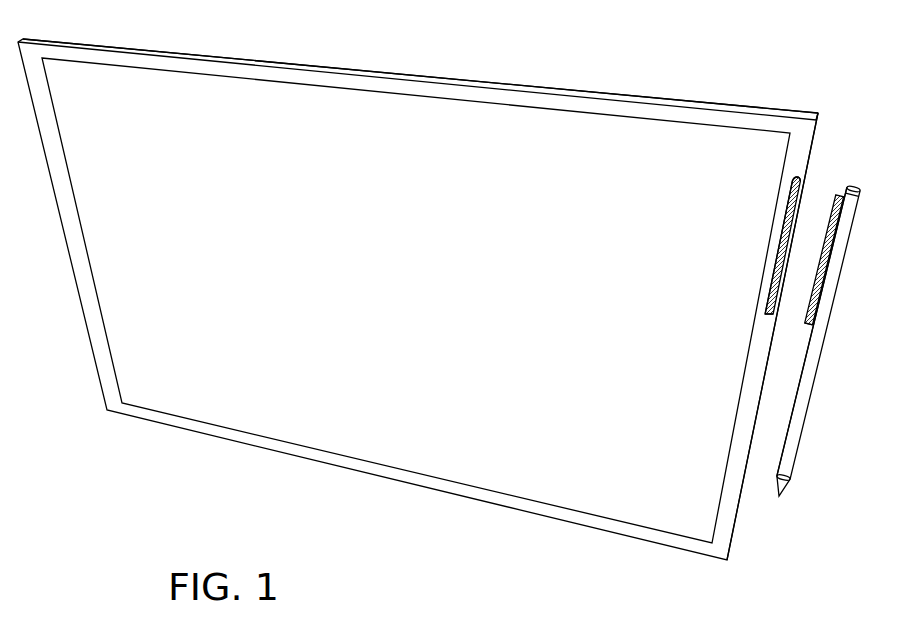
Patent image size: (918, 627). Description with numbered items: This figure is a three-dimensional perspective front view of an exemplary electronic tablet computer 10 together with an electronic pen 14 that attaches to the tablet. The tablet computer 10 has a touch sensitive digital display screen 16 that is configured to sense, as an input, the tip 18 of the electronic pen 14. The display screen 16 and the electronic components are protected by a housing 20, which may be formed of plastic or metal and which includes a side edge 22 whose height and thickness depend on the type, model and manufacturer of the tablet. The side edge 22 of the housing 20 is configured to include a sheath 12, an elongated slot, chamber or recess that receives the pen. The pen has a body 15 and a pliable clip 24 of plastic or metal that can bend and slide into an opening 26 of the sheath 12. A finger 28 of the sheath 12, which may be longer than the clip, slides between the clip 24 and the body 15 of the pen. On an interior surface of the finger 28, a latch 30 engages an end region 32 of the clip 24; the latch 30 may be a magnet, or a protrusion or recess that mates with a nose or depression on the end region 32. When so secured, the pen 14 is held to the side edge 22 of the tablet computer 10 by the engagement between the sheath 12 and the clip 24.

The electronic tablet computer 10 is at (478, 510).
The sheath 12 is at (800, 198).
The electronic pen 14 is at (815, 405).
The body of the pen 15 is at (831, 273).
The touch sensitive digital display screen 16 is at (348, 123).
The tip 18 is at (782, 497).
The housing 20 is at (540, 103).
The side edge 22 is at (813, 153).
The clip 24 is at (826, 258).
The opening 26 is at (800, 198).
The finger 28 is at (785, 278).
The latch 30 is at (780, 296).
The end region 32 is at (809, 321).